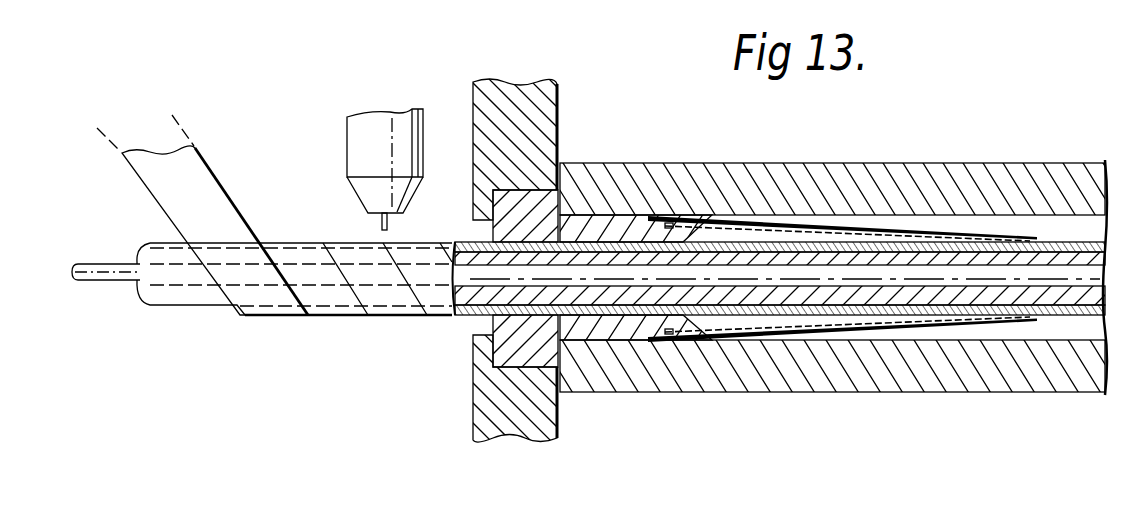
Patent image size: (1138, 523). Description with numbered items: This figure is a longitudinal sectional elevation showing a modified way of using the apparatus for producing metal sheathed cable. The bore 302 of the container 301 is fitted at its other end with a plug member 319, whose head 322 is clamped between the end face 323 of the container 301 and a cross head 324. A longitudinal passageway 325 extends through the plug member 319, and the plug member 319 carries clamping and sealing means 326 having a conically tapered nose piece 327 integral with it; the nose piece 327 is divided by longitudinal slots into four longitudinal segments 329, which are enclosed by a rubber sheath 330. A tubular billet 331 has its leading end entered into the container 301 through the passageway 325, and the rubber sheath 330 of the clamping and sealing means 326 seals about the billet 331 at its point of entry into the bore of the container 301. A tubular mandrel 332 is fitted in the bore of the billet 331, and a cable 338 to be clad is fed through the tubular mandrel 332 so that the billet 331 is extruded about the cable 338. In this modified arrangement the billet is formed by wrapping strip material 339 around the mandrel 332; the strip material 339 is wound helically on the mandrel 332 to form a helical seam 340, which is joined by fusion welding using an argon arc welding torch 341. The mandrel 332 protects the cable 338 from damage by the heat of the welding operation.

The container 301 is at (992, 181).
The bore 302 is at (1066, 234).
The plug member 319 is at (632, 220).
The head 322 is at (530, 195).
The end face 323 is at (575, 225).
The cross head 324 is at (538, 113).
The longitudinal passageway 325 is at (707, 213).
The clamping and sealing means 326 is at (787, 233).
The conically tapered nose piece 327 is at (838, 242).
The longitudinal segments 329 is at (807, 323).
The rubber sheath 330 is at (875, 333).
The tubular billet 331 is at (695, 302).
The tubular mandrel 332 is at (192, 306).
The cable 338 is at (125, 281).
The strip material 339 is at (227, 210).
The helical seam 340 is at (290, 286).
The argon arc welding torch 341 is at (360, 137).